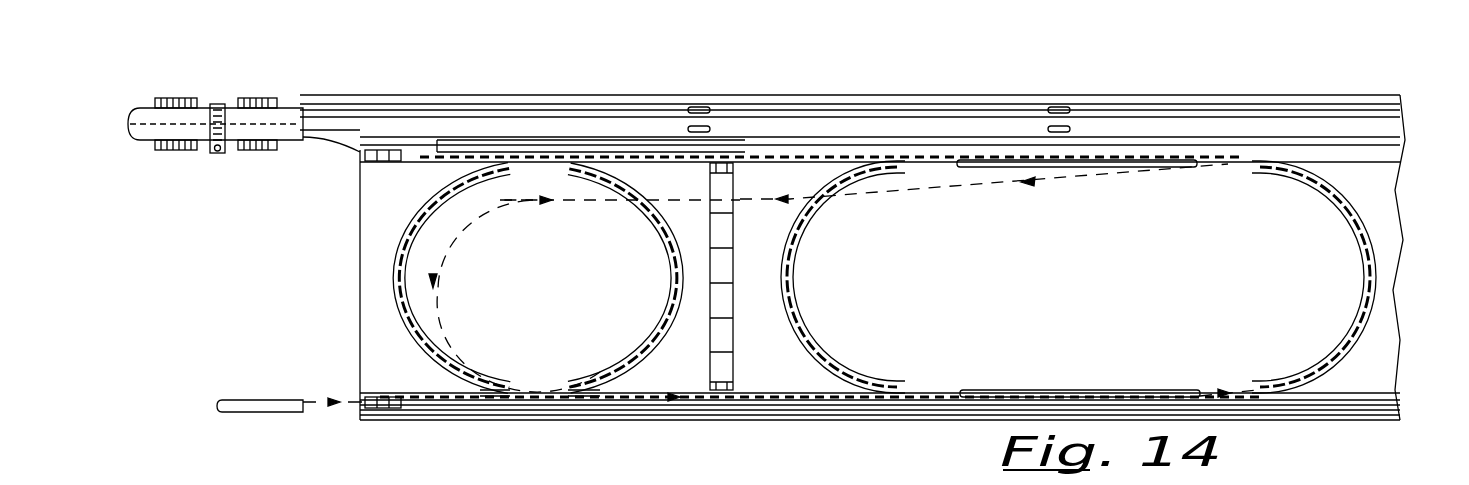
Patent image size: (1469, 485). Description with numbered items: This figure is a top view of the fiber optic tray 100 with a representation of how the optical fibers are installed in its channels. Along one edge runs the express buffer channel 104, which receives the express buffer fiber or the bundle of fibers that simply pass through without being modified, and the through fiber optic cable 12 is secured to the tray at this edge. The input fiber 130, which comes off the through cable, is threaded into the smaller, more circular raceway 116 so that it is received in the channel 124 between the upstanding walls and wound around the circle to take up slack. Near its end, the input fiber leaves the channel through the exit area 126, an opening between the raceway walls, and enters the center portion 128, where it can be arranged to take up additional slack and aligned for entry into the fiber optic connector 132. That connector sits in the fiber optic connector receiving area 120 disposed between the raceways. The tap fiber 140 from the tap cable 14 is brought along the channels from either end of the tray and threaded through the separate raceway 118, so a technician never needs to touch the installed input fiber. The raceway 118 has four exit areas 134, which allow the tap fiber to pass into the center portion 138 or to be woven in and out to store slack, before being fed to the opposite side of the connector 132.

The fiber optic cable 12 is at (152, 114).
The tap cable 14 is at (260, 403).
The fiber optic tray 100 is at (890, 97).
The express buffer channel 104 is at (413, 118).
The raceway 116 is at (480, 322).
The raceway 118 is at (1325, 297).
The fiber optic connector receiving area 120 is at (745, 172).
The channel 124 is at (400, 290).
The exit area 126 is at (522, 390).
The center portion 128 is at (593, 308).
The input fiber 130 is at (330, 140).
The fiber optic connector 132 is at (723, 370).
The exit area 134 is at (910, 163).
The center portion 138 is at (1150, 288).
The tap fiber 140 is at (1065, 183).